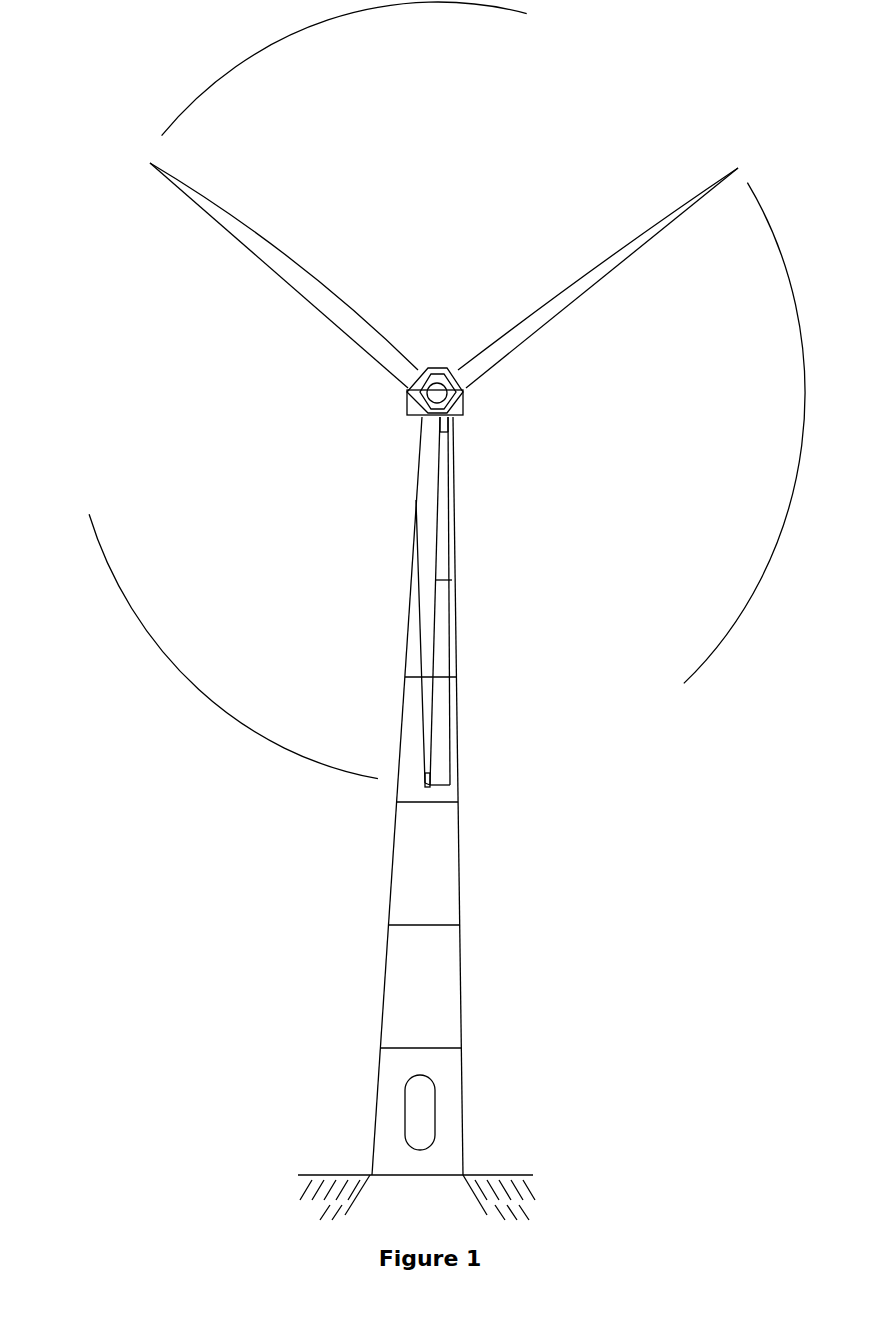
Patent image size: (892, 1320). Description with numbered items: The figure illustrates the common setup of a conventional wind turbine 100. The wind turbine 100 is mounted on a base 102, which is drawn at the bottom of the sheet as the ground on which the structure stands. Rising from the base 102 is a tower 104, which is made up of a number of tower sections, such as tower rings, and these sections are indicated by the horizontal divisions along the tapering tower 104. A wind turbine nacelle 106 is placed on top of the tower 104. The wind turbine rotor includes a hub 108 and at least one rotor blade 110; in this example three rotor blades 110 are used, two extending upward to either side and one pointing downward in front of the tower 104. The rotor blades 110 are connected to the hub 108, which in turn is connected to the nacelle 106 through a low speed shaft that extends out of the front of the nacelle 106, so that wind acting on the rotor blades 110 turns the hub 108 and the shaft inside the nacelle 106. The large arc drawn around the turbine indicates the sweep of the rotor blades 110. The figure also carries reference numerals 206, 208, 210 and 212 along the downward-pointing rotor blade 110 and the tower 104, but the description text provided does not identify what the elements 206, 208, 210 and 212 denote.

The wind turbine 100 is at (362, 1003).
The base 102 is at (357, 1197).
The tower 104 is at (447, 880).
The wind turbine nacelle 106 is at (465, 417).
The hub 108 is at (403, 392).
The rotor blade 110 is at (430, 640).
The cable 206 is at (438, 580).
The hub attachment 208 is at (433, 428).
The guide line 210 is at (420, 593).
The blade tip attachment 212 is at (428, 785).